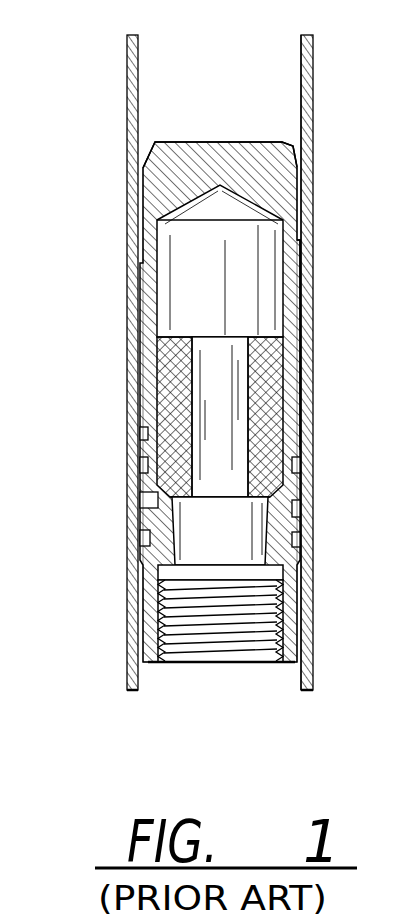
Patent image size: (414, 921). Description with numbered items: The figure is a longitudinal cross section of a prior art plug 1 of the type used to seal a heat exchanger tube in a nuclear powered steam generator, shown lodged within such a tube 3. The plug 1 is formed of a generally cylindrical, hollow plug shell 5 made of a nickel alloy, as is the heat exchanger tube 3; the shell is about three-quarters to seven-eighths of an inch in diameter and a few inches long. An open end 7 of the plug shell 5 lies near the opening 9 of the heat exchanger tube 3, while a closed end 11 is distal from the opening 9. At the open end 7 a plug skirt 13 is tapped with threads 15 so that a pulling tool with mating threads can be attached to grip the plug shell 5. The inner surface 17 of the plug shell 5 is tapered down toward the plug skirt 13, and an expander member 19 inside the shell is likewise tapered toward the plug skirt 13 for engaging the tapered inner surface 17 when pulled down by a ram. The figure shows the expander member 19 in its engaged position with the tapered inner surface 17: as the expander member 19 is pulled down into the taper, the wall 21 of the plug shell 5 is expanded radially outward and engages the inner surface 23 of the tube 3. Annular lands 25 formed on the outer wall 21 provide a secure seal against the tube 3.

The plug 1 is at (201, 122).
The heat exchanger tube 3 is at (127, 172).
The plug shell 5 is at (292, 244).
The open end 7 is at (240, 677).
The opening 9 is at (147, 684).
The closed end 11 is at (162, 143).
The plug skirt 13 is at (160, 630).
The threads 15 is at (278, 593).
The inner surface 17 is at (140, 374).
The expander member 19 is at (268, 424).
The wall 21 is at (306, 400).
The inner surface of tube 23 is at (301, 117).
The annular lands 25 is at (146, 508).